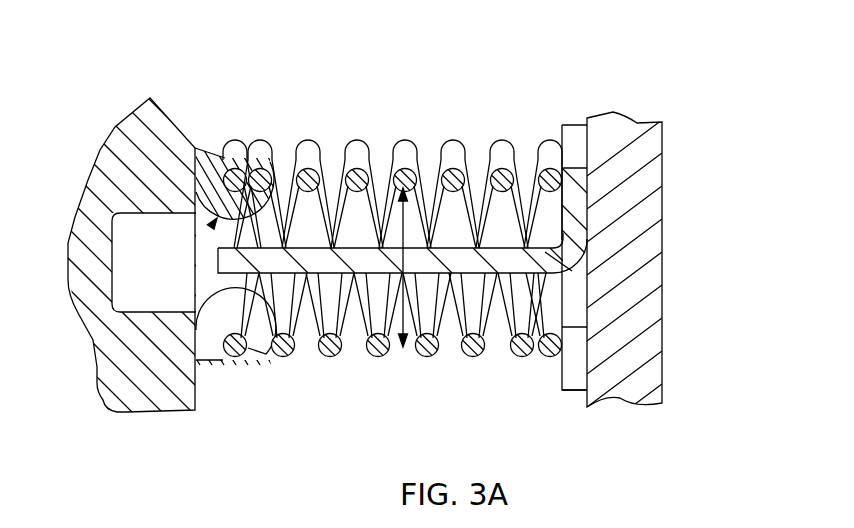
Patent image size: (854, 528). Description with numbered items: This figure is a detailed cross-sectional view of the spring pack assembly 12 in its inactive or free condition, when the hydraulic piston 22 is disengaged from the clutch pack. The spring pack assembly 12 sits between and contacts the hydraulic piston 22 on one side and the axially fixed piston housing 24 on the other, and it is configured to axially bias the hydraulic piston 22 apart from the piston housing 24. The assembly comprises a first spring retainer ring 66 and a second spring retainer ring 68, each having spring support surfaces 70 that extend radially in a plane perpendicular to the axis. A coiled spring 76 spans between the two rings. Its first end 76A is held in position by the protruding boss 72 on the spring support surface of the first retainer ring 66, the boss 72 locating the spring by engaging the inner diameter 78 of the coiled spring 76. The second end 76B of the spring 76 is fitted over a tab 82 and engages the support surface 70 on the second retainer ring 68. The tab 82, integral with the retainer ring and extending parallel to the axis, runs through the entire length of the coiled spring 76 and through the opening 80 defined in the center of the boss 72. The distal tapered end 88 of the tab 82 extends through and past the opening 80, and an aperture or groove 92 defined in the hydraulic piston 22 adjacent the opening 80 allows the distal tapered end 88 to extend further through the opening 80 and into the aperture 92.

The spring pack assembly 12 is at (437, 90).
The hydraulic piston 22 is at (118, 145).
The piston housing 24 is at (648, 202).
The first spring retainer ring 66 is at (213, 148).
The second spring retainer ring 68 is at (573, 127).
The spring support surface 70 is at (560, 378).
The boss 72 is at (248, 336).
The coiled spring 76 is at (408, 165).
The first end of coiled spring 76A is at (236, 165).
The second end of coiled spring 76B is at (551, 160).
The inner diameter of coiled spring 78 is at (400, 266).
The opening 80 is at (210, 228).
The tab 82 is at (495, 273).
The distal tapered end 88 is at (218, 268).
The aperture or groove 92 is at (125, 293).